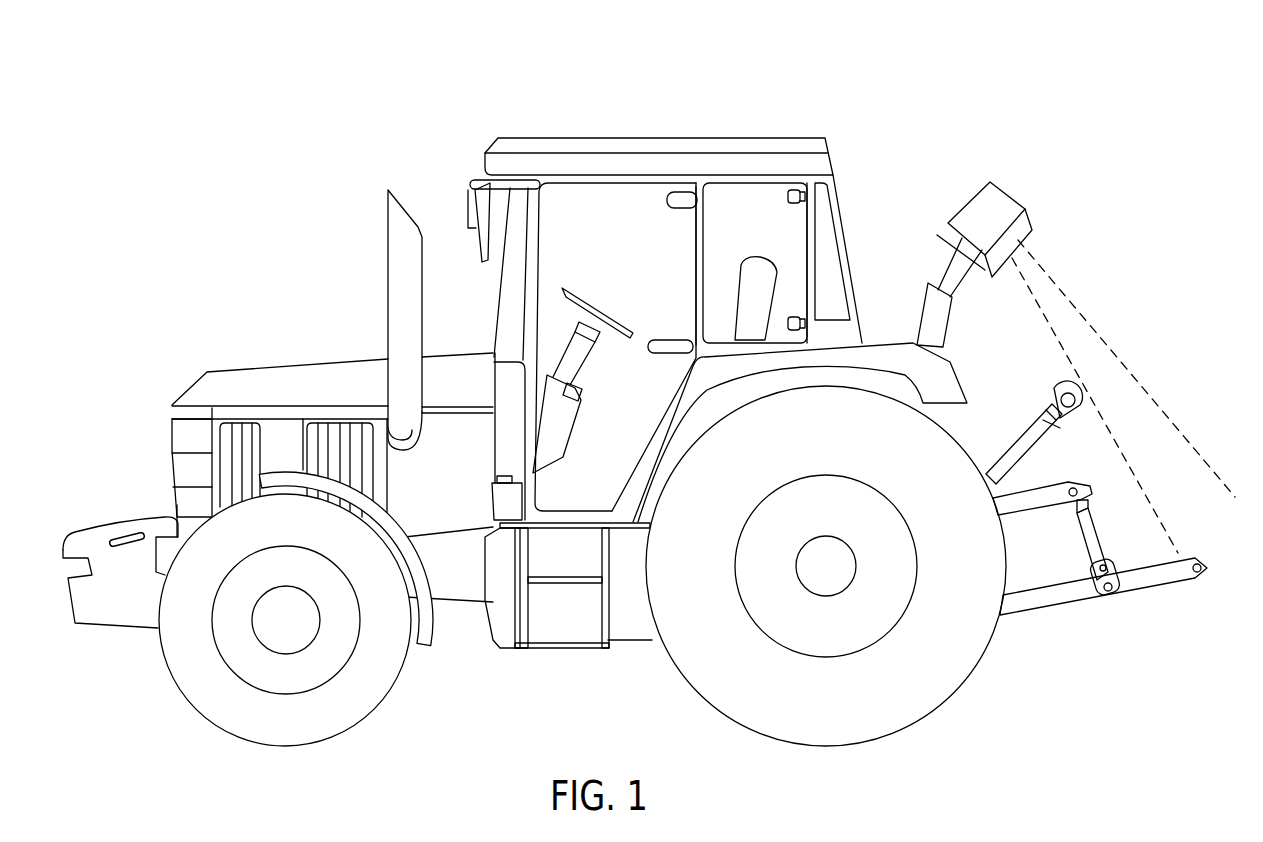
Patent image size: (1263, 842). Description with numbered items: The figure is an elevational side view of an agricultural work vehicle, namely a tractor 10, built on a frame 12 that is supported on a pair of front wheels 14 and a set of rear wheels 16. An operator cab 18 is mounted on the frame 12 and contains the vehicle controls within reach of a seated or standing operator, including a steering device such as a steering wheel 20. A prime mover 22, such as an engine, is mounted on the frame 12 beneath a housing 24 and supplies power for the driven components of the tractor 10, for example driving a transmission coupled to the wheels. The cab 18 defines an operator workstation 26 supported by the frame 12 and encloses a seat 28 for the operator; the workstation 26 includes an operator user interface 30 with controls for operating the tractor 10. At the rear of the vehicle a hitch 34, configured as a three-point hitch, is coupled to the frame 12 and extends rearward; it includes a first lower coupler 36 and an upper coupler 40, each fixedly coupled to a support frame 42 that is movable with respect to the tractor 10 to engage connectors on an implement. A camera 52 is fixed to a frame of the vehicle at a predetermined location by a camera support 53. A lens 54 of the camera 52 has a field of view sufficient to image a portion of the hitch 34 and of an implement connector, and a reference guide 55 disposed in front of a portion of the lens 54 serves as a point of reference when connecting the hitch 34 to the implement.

The tractor 10 is at (905, 88).
The frame 12 is at (457, 587).
The front wheels 14 is at (383, 682).
The rear wheels 16 is at (955, 650).
The operator cab 18 is at (796, 158).
The steering wheel 20 is at (563, 287).
The prime mover 22 is at (317, 432).
The housing 24 is at (318, 355).
The operator workstation 26 is at (563, 437).
The seat 28 is at (760, 270).
The operator user interface 30 is at (577, 387).
The hitch 34 is at (1140, 630).
The first lower coupler 36 is at (1198, 580).
The upper coupler 40 is at (1060, 390).
The support frame 42 is at (1042, 562).
The camera 52 is at (993, 200).
The camera support 53 is at (923, 262).
The lens 54 is at (1018, 230).
The reference guide 55 is at (988, 273).